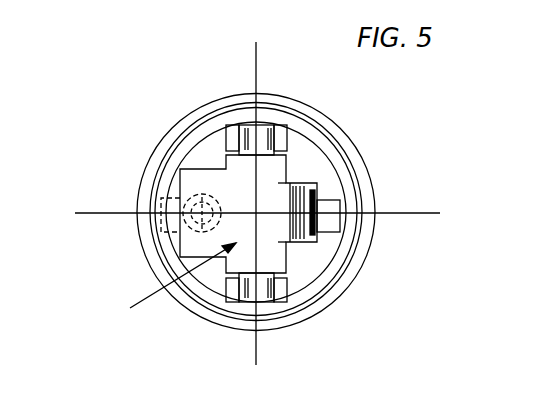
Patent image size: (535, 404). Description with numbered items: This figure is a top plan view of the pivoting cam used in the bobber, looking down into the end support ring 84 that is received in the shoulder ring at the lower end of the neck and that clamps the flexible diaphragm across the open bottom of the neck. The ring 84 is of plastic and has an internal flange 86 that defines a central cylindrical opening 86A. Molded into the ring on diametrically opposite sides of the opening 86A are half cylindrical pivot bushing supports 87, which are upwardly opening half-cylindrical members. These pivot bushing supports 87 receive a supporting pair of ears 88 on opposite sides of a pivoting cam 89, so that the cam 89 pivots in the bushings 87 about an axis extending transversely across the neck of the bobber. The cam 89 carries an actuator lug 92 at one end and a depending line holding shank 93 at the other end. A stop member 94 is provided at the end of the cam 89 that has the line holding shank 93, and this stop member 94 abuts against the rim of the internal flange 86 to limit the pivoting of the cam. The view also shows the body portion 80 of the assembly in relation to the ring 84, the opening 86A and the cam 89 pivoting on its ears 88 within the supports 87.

The valve body 80 is at (323, 187).
The end support ring 84 is at (337, 131).
The internal flange 86 is at (338, 168).
The central cylindrical opening 86A is at (205, 150).
The pivot bushing supports 87 is at (283, 136).
The ears 88 is at (246, 136).
The pivoting cam 89 is at (160, 282).
The actuator lug 92 is at (318, 240).
The line holding shank 93 is at (184, 198).
The stop member 94 is at (173, 228).